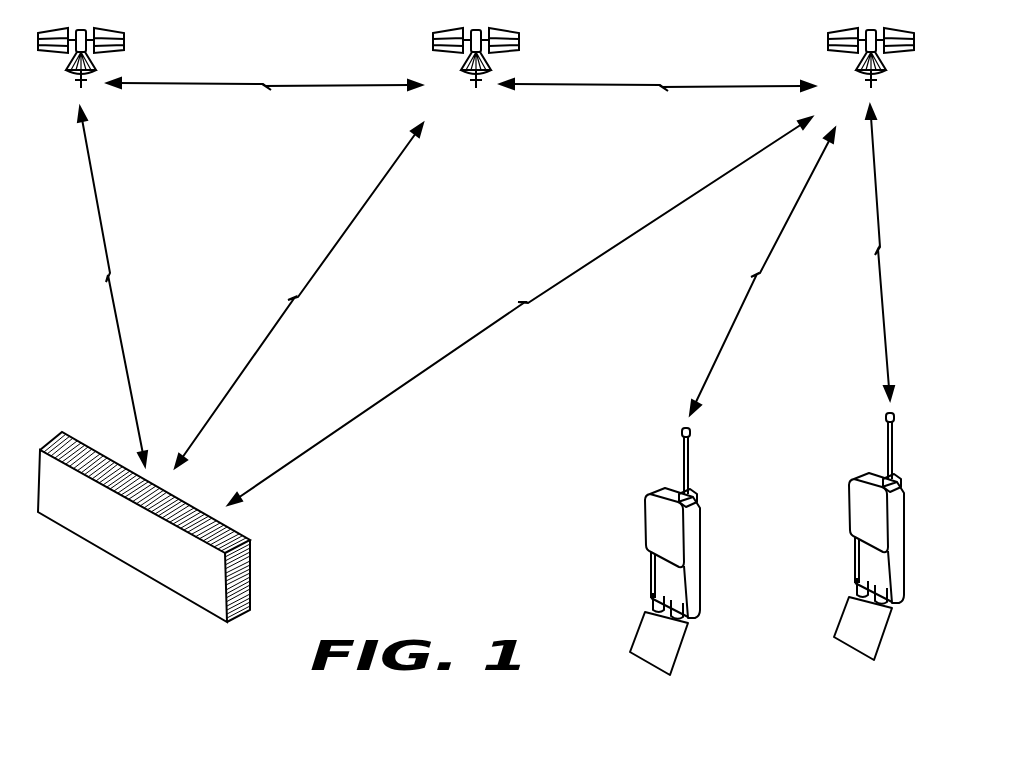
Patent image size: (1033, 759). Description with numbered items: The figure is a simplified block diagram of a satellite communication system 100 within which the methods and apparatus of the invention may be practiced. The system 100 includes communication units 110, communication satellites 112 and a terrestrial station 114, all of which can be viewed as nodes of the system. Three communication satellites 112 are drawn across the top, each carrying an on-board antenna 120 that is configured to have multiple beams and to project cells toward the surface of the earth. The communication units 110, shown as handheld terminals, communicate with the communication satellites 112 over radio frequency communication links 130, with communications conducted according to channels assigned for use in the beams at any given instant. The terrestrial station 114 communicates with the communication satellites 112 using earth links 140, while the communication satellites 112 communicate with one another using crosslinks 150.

The satellite communication system 100 is at (478, 604).
The communication unit 110 is at (644, 520).
The communication satellite 112 is at (124, 40).
The terrestrial station 114 is at (133, 572).
The antenna 120 is at (66, 70).
The RF communication link 130 is at (727, 342).
The earth link 140 is at (127, 371).
The crosslink 150 is at (343, 83).